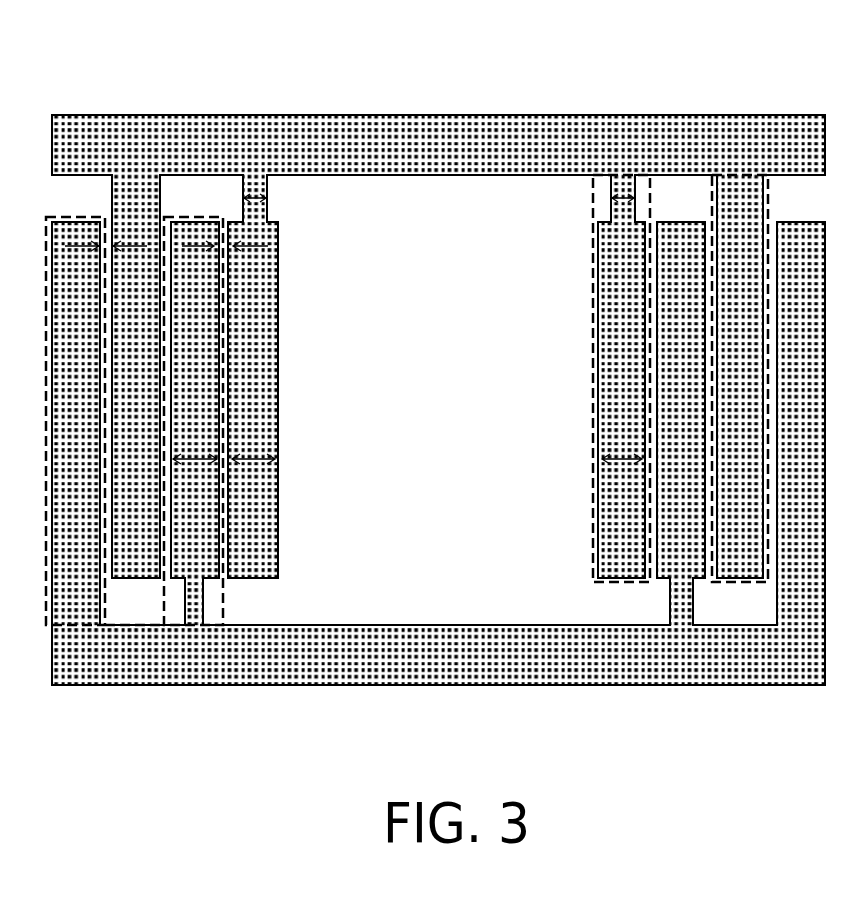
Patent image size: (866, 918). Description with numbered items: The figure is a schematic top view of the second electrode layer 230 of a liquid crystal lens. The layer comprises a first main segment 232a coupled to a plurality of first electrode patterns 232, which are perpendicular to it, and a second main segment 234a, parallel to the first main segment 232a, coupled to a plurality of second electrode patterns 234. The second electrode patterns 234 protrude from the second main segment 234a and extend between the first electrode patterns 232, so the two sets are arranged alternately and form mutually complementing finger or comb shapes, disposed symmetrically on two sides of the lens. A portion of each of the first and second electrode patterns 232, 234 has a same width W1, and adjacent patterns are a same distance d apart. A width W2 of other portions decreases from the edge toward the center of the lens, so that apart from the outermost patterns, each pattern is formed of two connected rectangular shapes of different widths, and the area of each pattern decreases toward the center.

The second electrode layer 230 is at (825, 773).
The first electrode patterns 232 is at (88, 603).
The first main segment 232a is at (445, 660).
The second electrode patterns 234 is at (731, 183).
The second main segment 234a is at (517, 150).
The distance d is at (222, 240).
The width W1 is at (622, 457).
The width W2 is at (623, 200).